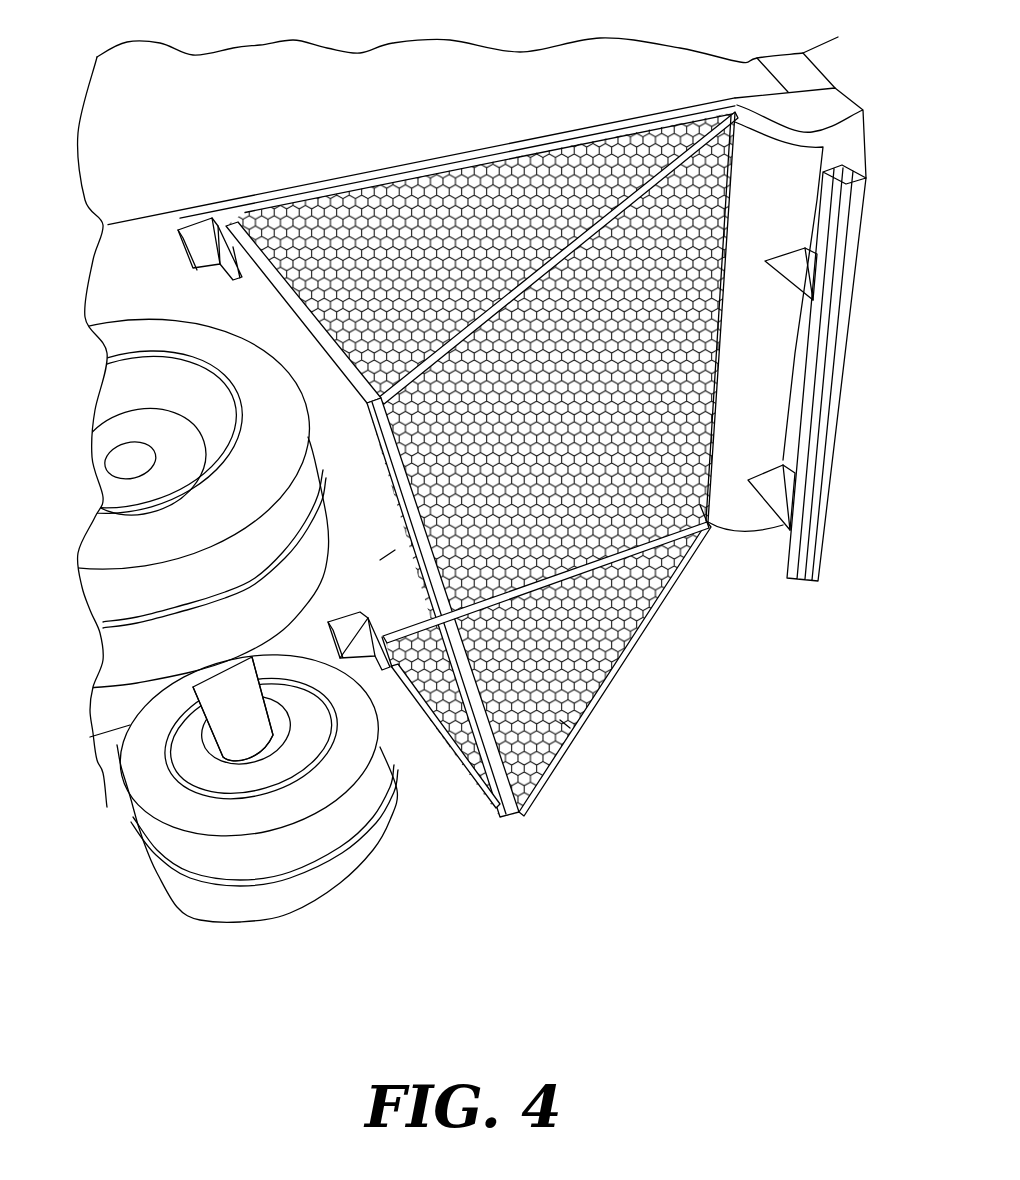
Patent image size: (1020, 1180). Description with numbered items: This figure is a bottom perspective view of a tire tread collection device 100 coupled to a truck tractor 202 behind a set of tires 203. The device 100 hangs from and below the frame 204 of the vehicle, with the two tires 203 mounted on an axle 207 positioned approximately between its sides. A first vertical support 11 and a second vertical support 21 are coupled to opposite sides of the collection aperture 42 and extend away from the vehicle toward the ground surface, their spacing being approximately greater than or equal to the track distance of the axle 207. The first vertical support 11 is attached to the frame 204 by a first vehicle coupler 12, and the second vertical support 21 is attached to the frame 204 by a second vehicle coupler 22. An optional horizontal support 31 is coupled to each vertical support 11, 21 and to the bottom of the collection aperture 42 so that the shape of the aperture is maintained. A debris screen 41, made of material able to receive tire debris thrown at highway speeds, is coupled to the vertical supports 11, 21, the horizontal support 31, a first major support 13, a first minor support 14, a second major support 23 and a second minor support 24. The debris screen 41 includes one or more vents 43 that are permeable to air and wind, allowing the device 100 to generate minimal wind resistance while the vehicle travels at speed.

The tire tread collection device 100 is at (485, 852).
The first vertical support 11 is at (465, 748).
The first vehicle coupler 12 is at (362, 650).
The first major support 13 is at (618, 655).
The first minor support 14 is at (425, 622).
The second vertical support 21 is at (272, 282).
The second vehicle coupler 22 is at (205, 245).
The second major support 23 is at (665, 135).
The second minor support 24 is at (322, 197).
The horizontal support 31 is at (410, 478).
The debris screen 41 is at (695, 556).
The collection aperture 42 is at (400, 538).
The vent 43 is at (568, 714).
The truck tractor 202 is at (130, 62).
The tire 203 is at (140, 603).
The frame 204 is at (140, 262).
The axle 207 is at (230, 688).